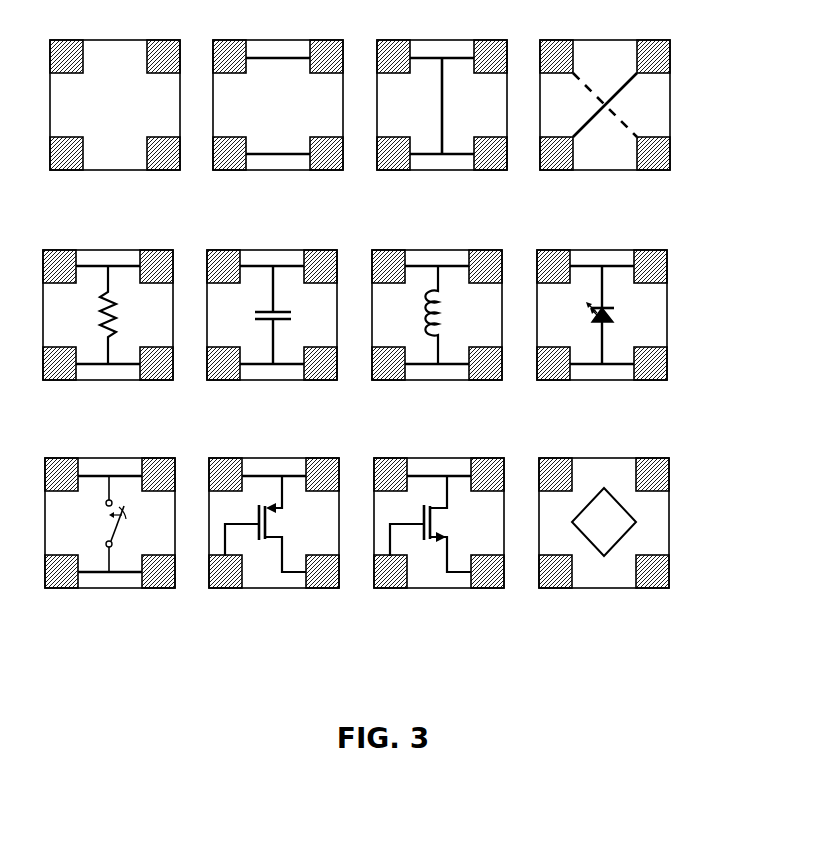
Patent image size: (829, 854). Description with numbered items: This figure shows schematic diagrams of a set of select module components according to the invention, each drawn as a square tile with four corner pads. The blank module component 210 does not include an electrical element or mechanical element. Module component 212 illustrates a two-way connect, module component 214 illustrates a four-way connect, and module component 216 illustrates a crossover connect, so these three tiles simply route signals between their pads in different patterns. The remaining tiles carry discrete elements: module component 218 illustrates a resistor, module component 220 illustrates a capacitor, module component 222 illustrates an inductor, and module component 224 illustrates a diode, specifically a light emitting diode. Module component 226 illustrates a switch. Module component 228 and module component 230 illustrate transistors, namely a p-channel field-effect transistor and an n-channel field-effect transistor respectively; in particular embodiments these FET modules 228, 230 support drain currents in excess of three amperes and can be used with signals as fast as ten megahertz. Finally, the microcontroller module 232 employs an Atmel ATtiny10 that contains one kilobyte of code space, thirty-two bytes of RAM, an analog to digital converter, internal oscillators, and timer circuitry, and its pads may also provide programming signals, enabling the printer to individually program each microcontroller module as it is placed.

The blank module component 210 is at (112, 137).
The 2-way connect module component 212 is at (271, 135).
The 4-way connect module component 214 is at (447, 135).
The crossover connect module component 216 is at (597, 132).
The resistor module component 218 is at (119, 338).
The capacitor module component 220 is at (286, 345).
The inductor module component 222 is at (452, 338).
The diode module component 224 is at (613, 340).
The switch module component 226 is at (119, 543).
The p-channel field-effect transistor module component 228 is at (267, 553).
The n-channel field-effect transistor module component 230 is at (431, 553).
The microcontroller module 232 is at (619, 555).